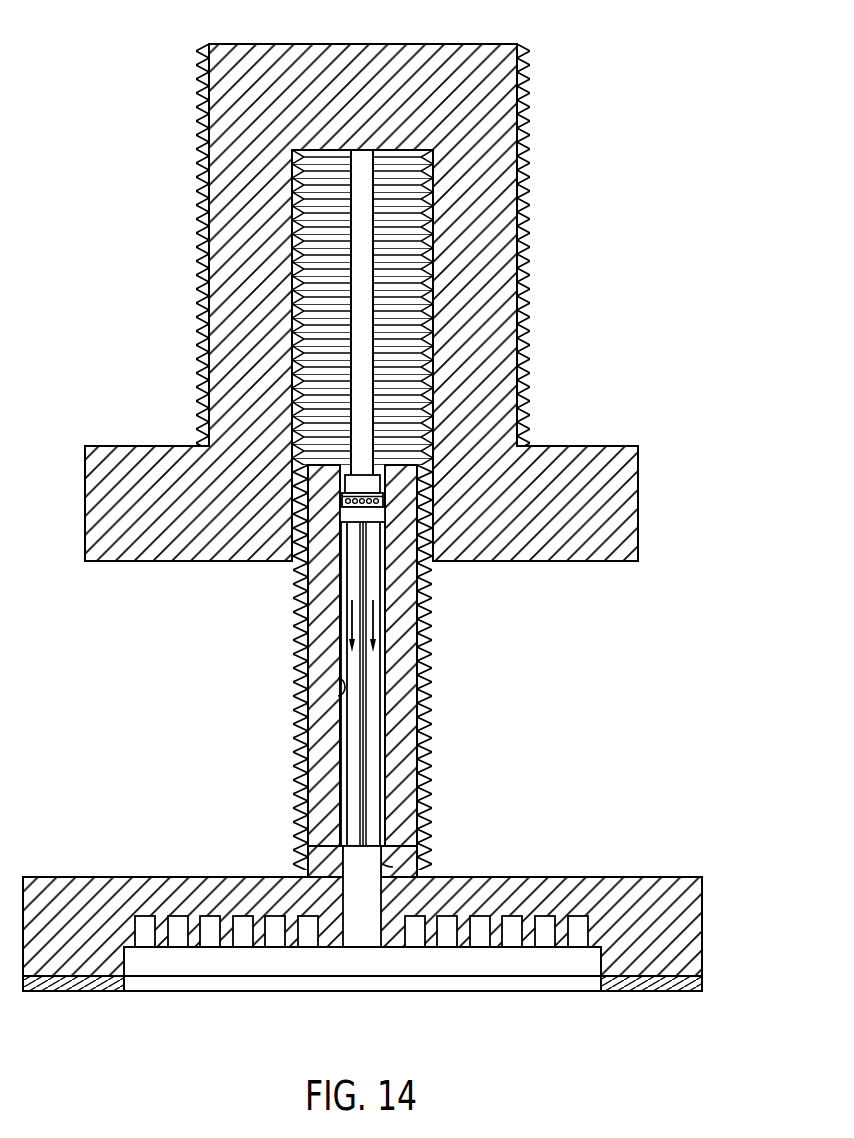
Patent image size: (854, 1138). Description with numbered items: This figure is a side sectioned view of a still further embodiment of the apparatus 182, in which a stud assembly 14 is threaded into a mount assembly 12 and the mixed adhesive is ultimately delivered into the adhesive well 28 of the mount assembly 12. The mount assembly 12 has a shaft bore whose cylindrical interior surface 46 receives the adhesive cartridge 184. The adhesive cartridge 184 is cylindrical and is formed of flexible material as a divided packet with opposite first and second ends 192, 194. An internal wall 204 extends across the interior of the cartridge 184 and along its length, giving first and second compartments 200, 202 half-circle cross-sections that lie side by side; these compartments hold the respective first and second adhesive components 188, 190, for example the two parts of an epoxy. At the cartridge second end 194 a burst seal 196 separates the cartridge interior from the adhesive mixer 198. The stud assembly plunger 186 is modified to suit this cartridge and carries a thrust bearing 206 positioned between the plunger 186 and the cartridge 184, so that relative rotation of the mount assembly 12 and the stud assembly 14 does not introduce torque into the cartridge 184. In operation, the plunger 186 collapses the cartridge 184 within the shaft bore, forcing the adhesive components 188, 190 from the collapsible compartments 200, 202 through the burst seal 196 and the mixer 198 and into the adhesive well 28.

The stud assembly 14 is at (572, 45).
The apparatus 182 is at (658, 362).
The stud assembly plunger 186 is at (365, 285).
The thrust bearing 206 is at (340, 495).
The cartridge first end 192 is at (302, 522).
The first compartment 200 is at (352, 602).
The second compartment 202 is at (373, 602).
The cylindrical interior surface 46 is at (338, 678).
The adhesive cartridge 184 is at (428, 702).
The first adhesive component 188 is at (349, 753).
The second adhesive component 190 is at (375, 752).
The internal wall 204 is at (362, 788).
The cartridge second end 194 is at (315, 848).
The burst seal 196 is at (393, 867).
The adhesive mixer 198 is at (372, 890).
The mount assembly 12 is at (708, 861).
The adhesive well 28 is at (241, 980).